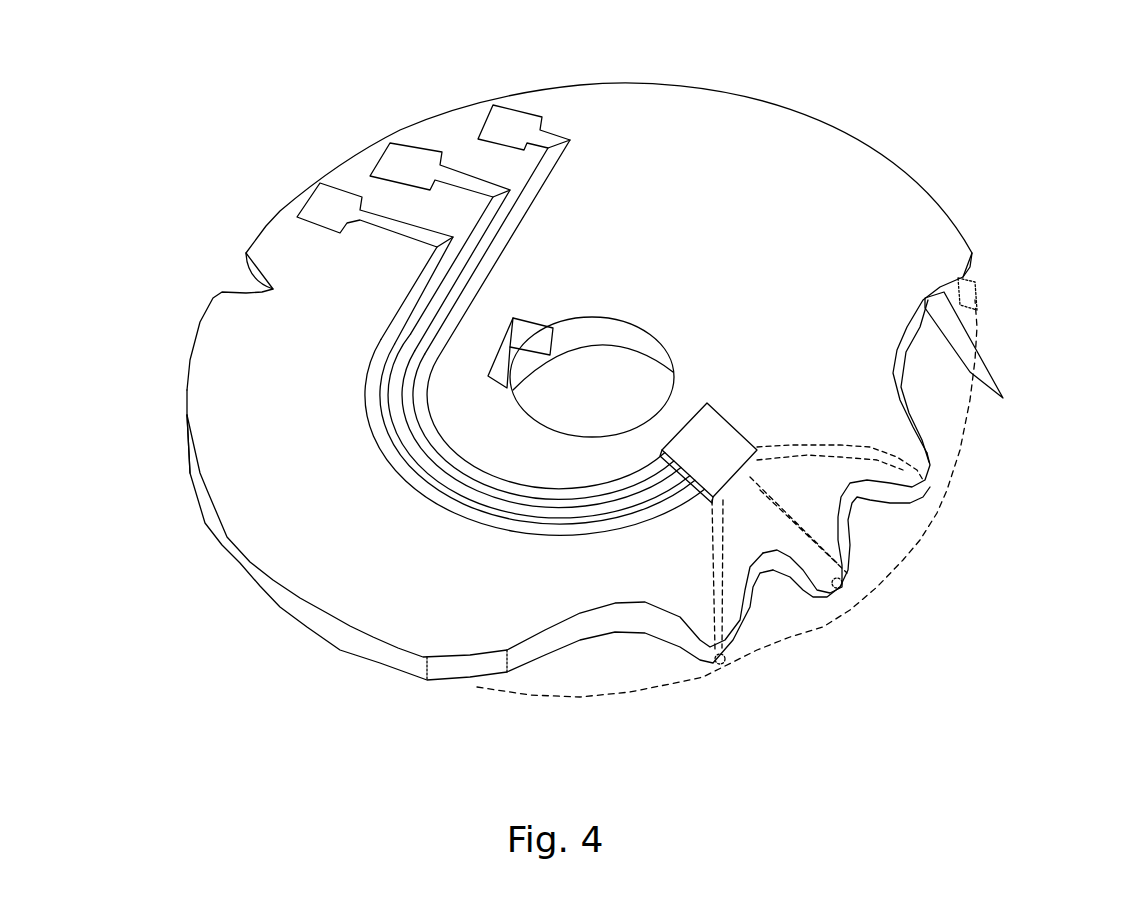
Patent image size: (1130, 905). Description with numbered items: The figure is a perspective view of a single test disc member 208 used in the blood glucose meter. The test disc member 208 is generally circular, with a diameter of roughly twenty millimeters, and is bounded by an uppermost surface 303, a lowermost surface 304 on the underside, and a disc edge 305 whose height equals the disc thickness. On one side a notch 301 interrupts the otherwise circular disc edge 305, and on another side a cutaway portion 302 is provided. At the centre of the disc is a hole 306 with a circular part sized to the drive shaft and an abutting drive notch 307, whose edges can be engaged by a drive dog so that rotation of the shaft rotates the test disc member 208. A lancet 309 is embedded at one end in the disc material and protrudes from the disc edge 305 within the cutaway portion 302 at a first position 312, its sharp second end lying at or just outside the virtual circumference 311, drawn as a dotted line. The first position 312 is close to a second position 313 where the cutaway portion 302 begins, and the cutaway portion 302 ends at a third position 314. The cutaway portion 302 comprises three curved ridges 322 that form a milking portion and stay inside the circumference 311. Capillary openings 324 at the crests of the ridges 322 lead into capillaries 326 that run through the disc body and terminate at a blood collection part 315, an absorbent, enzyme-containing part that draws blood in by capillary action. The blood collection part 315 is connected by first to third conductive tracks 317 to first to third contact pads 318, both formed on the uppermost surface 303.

The test disc member 208 is at (1000, 108).
The notch 301 is at (226, 284).
The cutaway portion 302 is at (856, 626).
The uppermost surface 303 is at (265, 508).
The lowermost surface 304 is at (229, 616).
The disc edge 305 is at (310, 620).
The hole 306 is at (580, 403).
The drive notch 307 is at (530, 338).
The lancet 309 is at (963, 340).
The circumference 311 is at (953, 480).
The first position 312 is at (968, 306).
The second position 313 is at (976, 265).
The third position 314 is at (468, 693).
The blood collection part 315 is at (707, 437).
The conductive tracks 317 is at (385, 445).
The contact pads 318 is at (507, 123).
The ridges 322 is at (840, 562).
The capillary openings 324 is at (720, 657).
The capillaries 326 is at (697, 543).